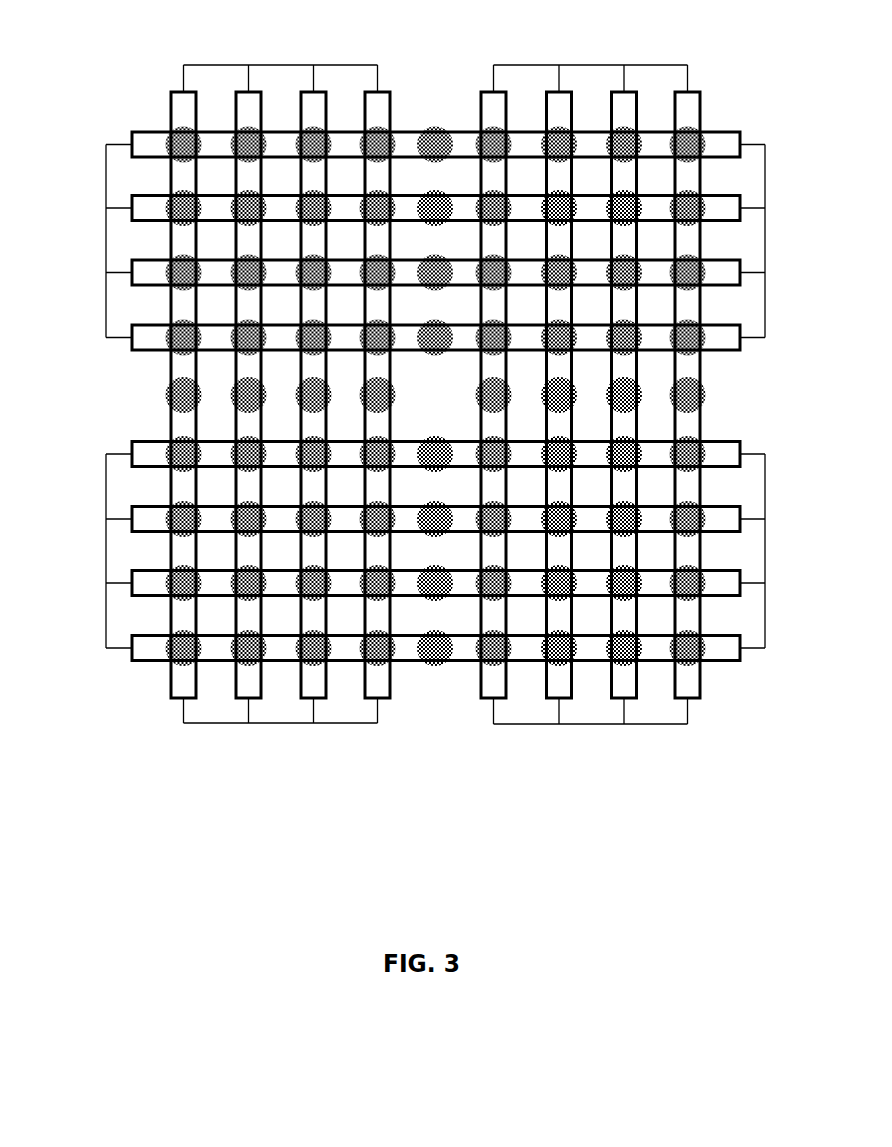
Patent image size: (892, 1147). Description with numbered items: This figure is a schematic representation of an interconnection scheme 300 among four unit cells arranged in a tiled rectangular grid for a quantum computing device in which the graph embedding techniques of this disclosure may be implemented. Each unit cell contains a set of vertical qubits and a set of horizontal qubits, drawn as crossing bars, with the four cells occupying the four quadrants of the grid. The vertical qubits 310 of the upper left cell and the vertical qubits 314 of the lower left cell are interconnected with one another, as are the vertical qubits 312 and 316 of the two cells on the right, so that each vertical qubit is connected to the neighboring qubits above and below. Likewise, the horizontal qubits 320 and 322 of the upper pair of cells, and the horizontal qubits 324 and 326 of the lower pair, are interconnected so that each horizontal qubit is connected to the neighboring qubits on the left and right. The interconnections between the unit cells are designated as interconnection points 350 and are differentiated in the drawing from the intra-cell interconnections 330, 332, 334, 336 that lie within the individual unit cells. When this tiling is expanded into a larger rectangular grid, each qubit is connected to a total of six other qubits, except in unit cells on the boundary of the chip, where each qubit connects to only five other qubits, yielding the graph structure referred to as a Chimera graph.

The interconnection scheme 300 is at (155, 56).
The vertical qubits 310 is at (281, 65).
The vertical qubits 312 is at (591, 65).
The vertical qubits 314 is at (280, 723).
The vertical qubits 316 is at (590, 724).
The horizontal qubits 320 is at (106, 242).
The horizontal qubits 322 is at (765, 238).
The horizontal qubits 324 is at (106, 550).
The horizontal qubits 326 is at (765, 548).
The intra-cell interconnections 330 is at (163, 352).
The intra-cell interconnections 332 is at (702, 352).
The intra-cell interconnections 334 is at (170, 662).
The intra-cell interconnections 336 is at (702, 663).
The interconnection points 350 is at (435, 432).